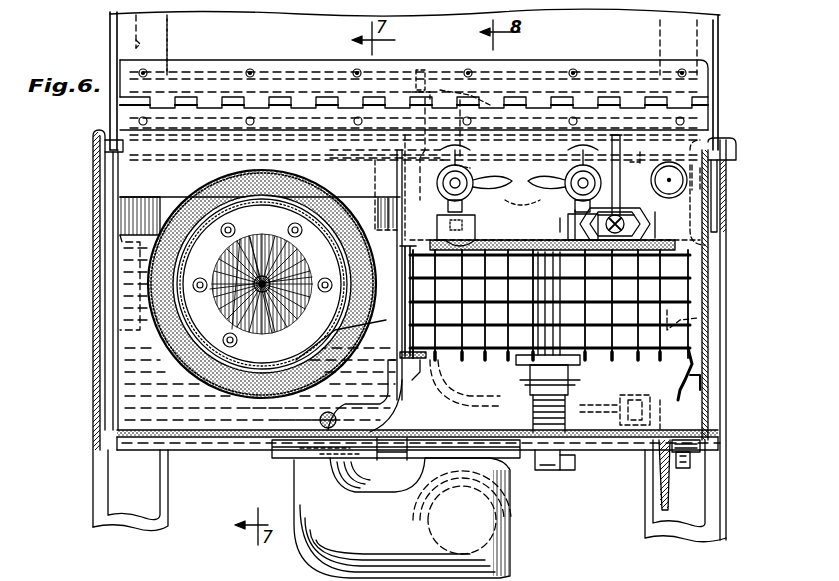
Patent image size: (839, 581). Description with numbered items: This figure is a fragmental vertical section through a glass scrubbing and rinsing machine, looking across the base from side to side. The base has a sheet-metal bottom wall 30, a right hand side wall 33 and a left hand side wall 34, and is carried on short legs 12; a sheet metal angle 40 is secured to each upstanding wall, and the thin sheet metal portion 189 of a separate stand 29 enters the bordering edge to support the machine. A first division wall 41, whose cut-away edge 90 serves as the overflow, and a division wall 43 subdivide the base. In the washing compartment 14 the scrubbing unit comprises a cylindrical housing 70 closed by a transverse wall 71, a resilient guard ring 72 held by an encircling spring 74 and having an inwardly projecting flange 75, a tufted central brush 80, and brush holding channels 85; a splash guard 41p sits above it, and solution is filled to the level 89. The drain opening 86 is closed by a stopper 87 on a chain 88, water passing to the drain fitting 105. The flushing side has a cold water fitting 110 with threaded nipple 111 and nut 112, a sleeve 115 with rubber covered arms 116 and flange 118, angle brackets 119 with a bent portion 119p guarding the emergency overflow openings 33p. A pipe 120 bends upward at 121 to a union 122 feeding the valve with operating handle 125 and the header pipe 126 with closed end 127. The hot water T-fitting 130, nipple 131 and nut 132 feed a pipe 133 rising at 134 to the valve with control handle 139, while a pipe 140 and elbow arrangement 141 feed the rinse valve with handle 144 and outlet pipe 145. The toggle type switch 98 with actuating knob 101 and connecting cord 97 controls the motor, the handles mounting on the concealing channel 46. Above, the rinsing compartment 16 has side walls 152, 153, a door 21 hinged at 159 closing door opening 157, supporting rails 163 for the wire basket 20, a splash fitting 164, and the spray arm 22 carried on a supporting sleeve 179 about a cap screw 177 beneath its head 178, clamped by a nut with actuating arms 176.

The legs 12 is at (152, 501).
The washing compartment 14 is at (128, 214).
The rinsing compartment 16 is at (686, 54).
The wire basket 20 is at (168, 31).
The door 21 is at (125, 27).
The spray arm 22 is at (515, 95).
The stand 29 is at (724, 513).
The bottom wall 30 is at (205, 426).
The right hand side wall 33 is at (708, 288).
The emergency overflow openings 33p is at (700, 377).
The left hand side wall 34 is at (122, 323).
The sheet metal angle 40 is at (92, 176).
The first division wall 41 is at (404, 405).
The splash guard 41p is at (374, 198).
The division wall 43 is at (660, 343).
The mounting and concealing channel 46 is at (112, 118).
The cylindrical housing 70 is at (112, 281).
The transverse wall 71 is at (282, 198).
The resilient guard ring 72 is at (200, 350).
The encircling spring 74 is at (178, 392).
The inwardly projecting flange 75 is at (150, 328).
The tufted central brush 80 is at (182, 350).
The brush holding channels 85 is at (215, 188).
The drain opening 86 is at (280, 458).
The stopper 87 is at (290, 413).
The chain 88 is at (385, 392).
The level 89 is at (112, 238).
The edge 90 is at (440, 208).
The connecting cord 97 is at (662, 490).
The toggle type switch 98 is at (705, 127).
The actuating knob 101 is at (665, 163).
The drain fitting 105 is at (512, 552).
The fitting 110 is at (568, 387).
The threaded nipple 111 is at (552, 472).
The nut 112 is at (576, 460).
The sleeve 115 is at (598, 291).
The rubber covered arms 116 is at (498, 254).
The flange 118 is at (578, 377).
The angle brackets 119 is at (684, 355).
The downwardly bent portion 119p is at (700, 365).
The pipe 120 is at (530, 421).
The upwardly bent portion 121 is at (572, 312).
The union 122 is at (574, 267).
The operating handle 125 is at (528, 180).
The header pipe 126 is at (332, 148).
The closed end 127 is at (665, 176).
The T-fitting 130 is at (690, 397).
The threaded nipple 131 is at (686, 468).
The nut 132 is at (702, 445).
The pipe 133 is at (610, 397).
The upward pipe portion 134 is at (450, 373).
The control handle 139 is at (478, 153).
The pipe 140 is at (712, 307).
The elbow and pipe arrangement 141 is at (728, 210).
The valve handle 144 is at (616, 170).
The pipe 145 is at (518, 199).
The side wall 152 is at (718, 26).
The side wall 153 is at (110, 13).
The door opening 157 is at (136, 47).
The hinge 159 is at (322, 98).
The supporting rails 163 is at (240, 72).
The splash fitting 164 is at (615, 122).
The actuating arms 176 is at (500, 122).
The cap screw 177 is at (436, 76).
The head 178 is at (444, 70).
The supporting sleeve 179 is at (516, 96).
The thin sheet metal portion 189 is at (728, 181).